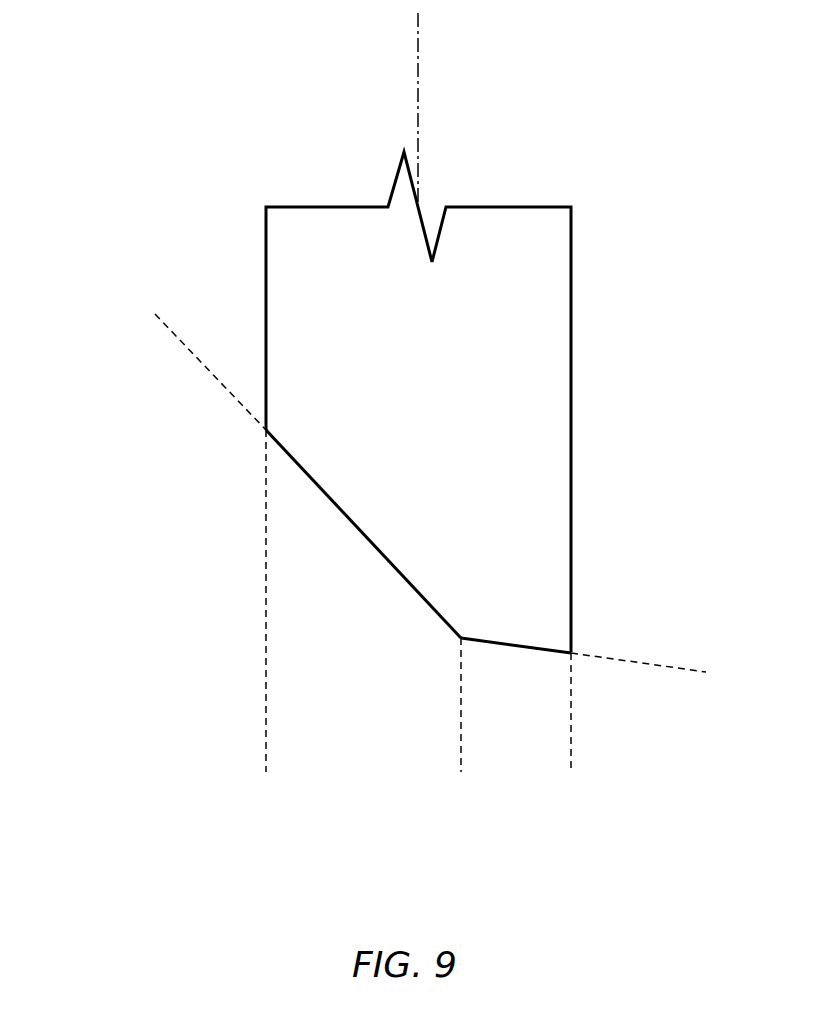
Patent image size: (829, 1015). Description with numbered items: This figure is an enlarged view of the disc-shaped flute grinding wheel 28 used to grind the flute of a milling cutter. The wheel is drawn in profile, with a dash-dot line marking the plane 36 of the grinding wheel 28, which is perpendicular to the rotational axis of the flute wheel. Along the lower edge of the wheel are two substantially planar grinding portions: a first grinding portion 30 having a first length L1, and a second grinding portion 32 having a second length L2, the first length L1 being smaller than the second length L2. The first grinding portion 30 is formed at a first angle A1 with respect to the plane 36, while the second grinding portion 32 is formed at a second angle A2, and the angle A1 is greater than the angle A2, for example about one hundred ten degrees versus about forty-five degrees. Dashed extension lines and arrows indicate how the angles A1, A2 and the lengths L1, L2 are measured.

The flute grinding wheel 28 is at (556, 325).
The first grinding portion 30 is at (490, 644).
The second grinding portion 32 is at (385, 562).
The plane of the grinding wheel 36 is at (418, 62).
The first angle A1 is at (672, 660).
The second angle A2 is at (264, 302).
The first length L1 is at (569, 737).
The second length L2 is at (459, 737).